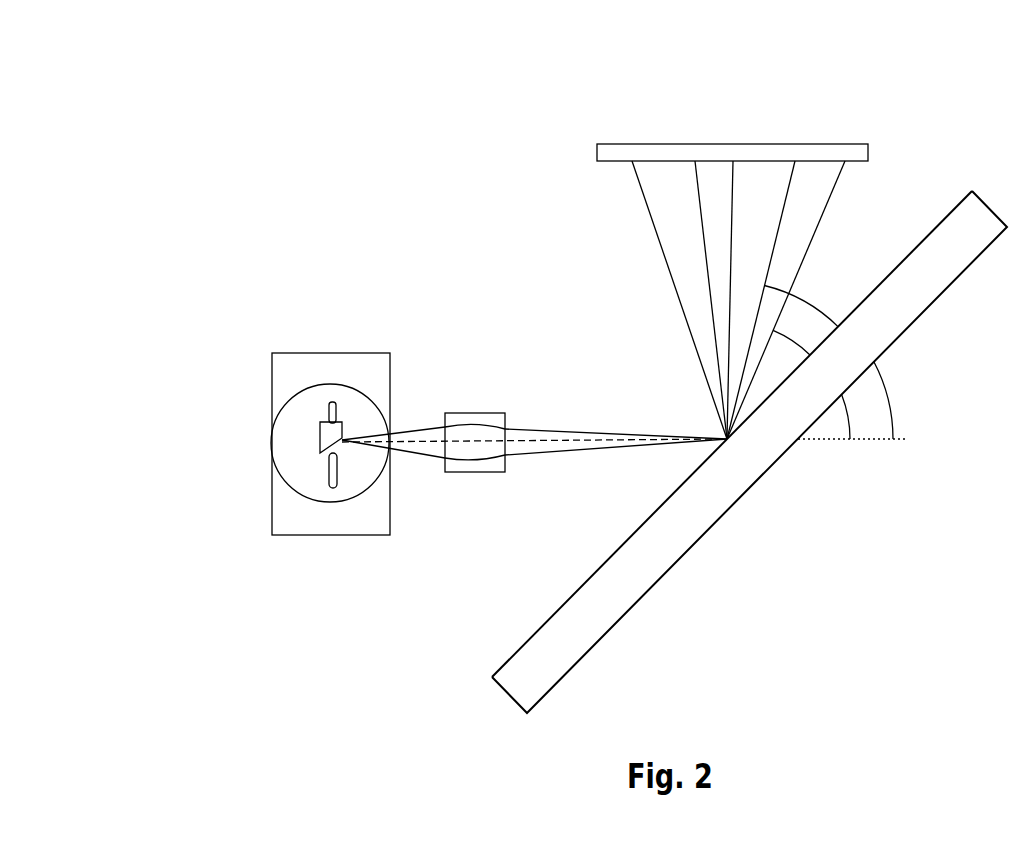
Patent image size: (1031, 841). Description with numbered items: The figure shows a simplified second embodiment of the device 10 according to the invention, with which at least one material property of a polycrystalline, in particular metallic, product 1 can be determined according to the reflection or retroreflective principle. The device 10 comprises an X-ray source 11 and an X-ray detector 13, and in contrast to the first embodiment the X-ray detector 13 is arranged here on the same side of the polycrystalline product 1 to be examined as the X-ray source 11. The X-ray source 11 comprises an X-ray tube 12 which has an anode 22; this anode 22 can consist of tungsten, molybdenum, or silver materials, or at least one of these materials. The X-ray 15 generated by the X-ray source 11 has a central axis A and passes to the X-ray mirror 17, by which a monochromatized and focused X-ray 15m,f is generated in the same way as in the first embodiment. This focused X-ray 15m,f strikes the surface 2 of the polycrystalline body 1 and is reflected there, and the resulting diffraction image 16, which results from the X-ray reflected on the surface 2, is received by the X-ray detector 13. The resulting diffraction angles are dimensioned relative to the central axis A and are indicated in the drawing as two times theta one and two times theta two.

The X-ray diffraction apparatus 10 is at (188, 642).
The X-ray source housing 11 is at (327, 352).
The X-ray tube 12 is at (295, 433).
The anode / target 22 is at (333, 435).
The divergent X-ray beam 15 is at (432, 428).
The X-ray optic / lens 17 is at (480, 413).
The focused X-ray beam 15m,f is at (593, 432).
The beam axis A is at (556, 452).
The sample 1 is at (668, 542).
The sample surface 2 is at (652, 513).
The detector 13 is at (703, 143).
The diffracted X-rays 16 is at (778, 242).